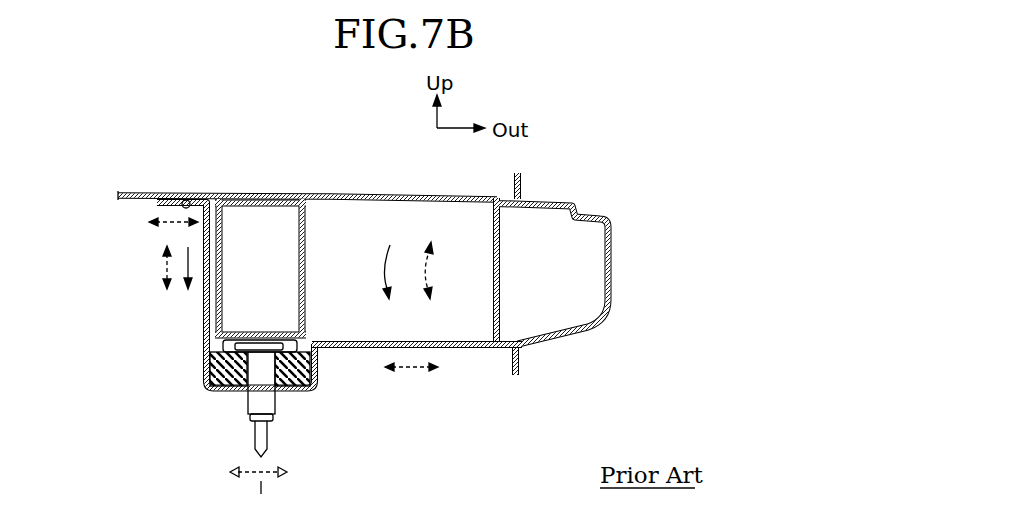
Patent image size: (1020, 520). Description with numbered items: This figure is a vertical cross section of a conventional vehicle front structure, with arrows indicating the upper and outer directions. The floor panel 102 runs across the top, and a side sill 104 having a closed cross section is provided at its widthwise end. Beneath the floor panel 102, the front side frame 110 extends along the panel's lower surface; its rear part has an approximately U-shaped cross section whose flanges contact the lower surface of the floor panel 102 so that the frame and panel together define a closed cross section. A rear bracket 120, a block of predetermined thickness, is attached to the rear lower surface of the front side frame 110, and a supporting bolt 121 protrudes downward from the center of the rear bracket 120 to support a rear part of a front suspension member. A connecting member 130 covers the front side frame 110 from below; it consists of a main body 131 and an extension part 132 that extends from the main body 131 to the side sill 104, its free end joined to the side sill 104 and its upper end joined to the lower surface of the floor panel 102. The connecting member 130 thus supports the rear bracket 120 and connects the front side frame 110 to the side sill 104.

The floor panel 102 is at (370, 194).
The side sill 104 is at (563, 199).
The front side frame 110 is at (308, 258).
The rear bracket 120 is at (208, 370).
The supporting bolt 121 is at (255, 406).
The connecting member 130 is at (317, 393).
The main body 131 is at (203, 327).
The extension part 132 is at (463, 350).